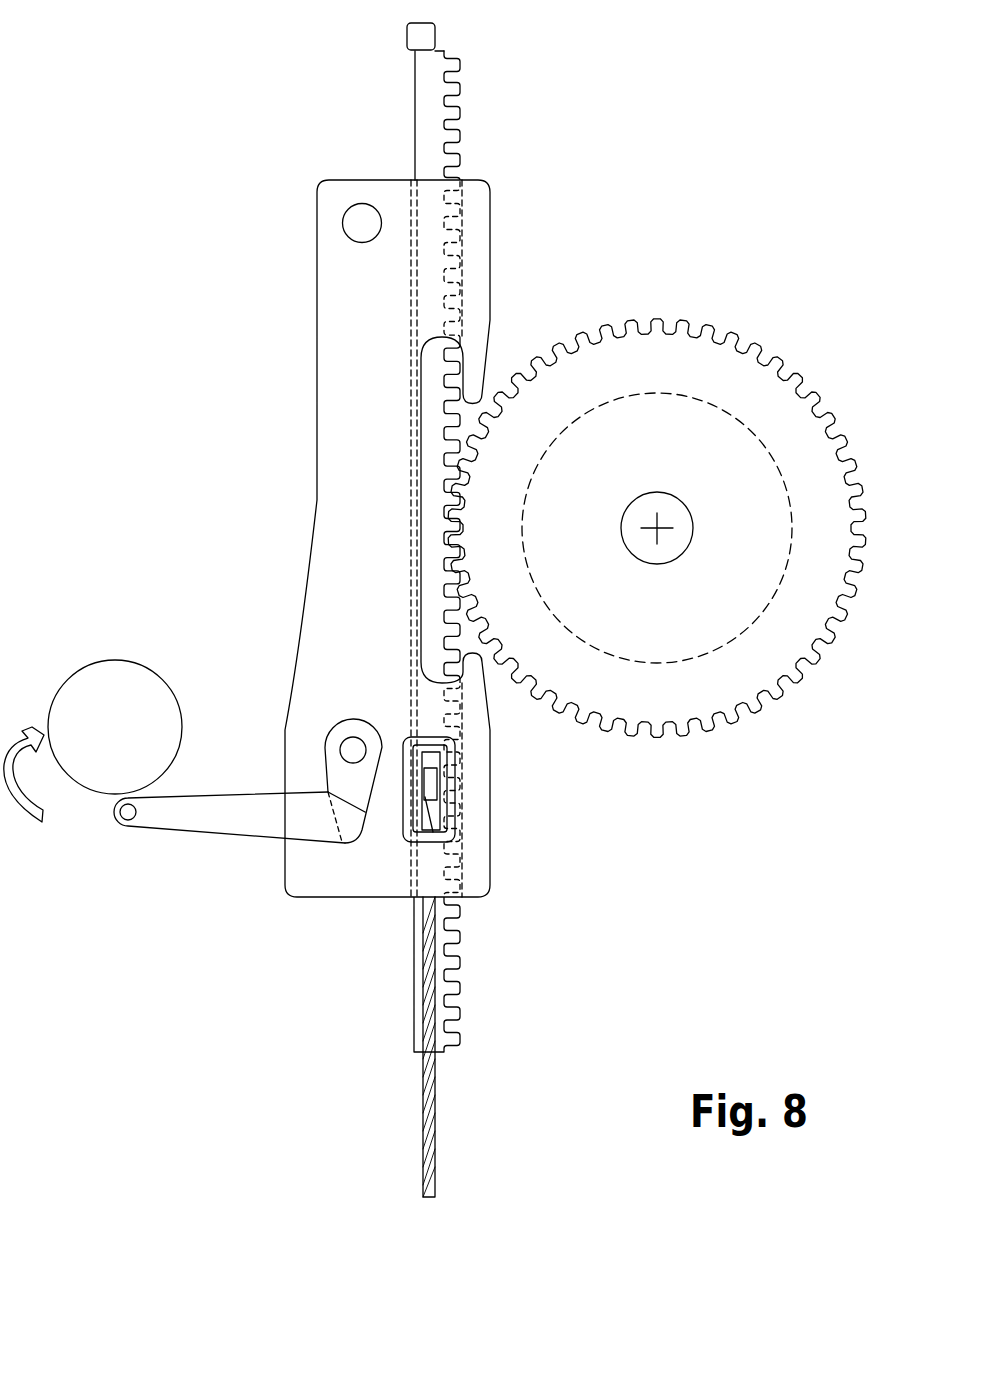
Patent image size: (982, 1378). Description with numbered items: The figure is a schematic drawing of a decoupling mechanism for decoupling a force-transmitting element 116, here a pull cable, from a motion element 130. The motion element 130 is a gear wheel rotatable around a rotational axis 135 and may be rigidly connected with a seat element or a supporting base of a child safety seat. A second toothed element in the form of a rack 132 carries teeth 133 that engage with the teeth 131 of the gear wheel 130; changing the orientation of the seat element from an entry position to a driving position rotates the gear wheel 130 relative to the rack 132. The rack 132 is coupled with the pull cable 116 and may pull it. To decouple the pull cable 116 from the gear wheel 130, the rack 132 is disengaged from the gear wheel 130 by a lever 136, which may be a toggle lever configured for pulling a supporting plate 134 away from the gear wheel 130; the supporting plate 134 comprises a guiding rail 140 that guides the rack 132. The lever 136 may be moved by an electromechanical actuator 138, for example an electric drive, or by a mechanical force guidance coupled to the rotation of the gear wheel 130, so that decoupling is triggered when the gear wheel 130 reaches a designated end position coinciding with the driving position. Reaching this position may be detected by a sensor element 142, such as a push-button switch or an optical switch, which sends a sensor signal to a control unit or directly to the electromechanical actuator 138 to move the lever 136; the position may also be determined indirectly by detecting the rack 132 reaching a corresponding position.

The force-transmitting element 116 is at (423, 1128).
The motion element 130 is at (758, 680).
The teeth 131 is at (806, 368).
The rack 132 is at (423, 105).
The teeth 133 is at (455, 125).
The supporting plate 134 is at (330, 445).
The rotational axis 135 is at (658, 530).
The lever 136 is at (212, 823).
The electromechanical actuator 138 is at (113, 670).
The guiding rail 140 is at (463, 250).
The sensor element 142 is at (407, 36).